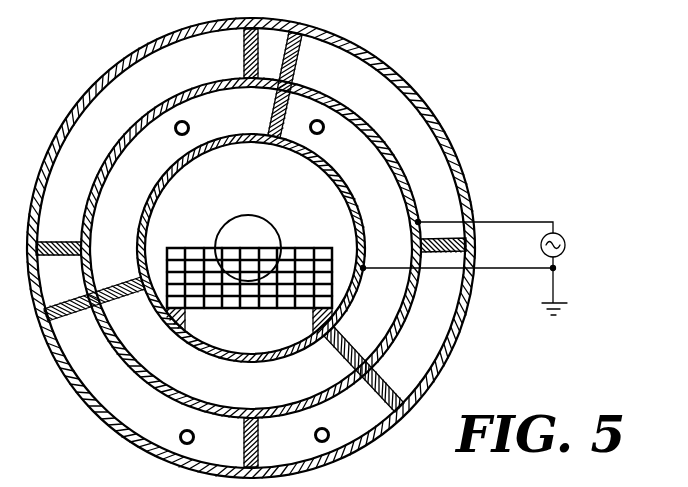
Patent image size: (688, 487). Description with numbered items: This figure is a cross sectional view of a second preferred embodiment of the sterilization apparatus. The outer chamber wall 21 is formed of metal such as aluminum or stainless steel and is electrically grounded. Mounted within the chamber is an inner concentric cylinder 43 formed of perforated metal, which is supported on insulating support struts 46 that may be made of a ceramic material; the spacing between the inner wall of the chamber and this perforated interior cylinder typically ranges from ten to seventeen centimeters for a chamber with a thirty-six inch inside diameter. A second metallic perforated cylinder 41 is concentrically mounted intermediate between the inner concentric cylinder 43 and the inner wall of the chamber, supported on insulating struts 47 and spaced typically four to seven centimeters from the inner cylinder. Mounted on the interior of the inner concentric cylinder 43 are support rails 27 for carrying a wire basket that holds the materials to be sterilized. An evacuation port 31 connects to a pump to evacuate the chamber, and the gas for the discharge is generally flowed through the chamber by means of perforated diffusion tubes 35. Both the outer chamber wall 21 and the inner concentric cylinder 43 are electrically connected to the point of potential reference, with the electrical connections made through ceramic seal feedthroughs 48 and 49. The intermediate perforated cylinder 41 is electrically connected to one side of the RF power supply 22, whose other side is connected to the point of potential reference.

The outer chamber wall 21 is at (127, 56).
The second metallic perforated cylinder 41 is at (383, 148).
The inner concentric cylinder 43 is at (317, 159).
The insulating struts 47 is at (241, 50).
The insulating support struts 46 is at (62, 318).
The perforated diffusion tubes 35 is at (181, 429).
The support rails 27 is at (187, 318).
The evacuation port 31 is at (250, 243).
The ceramic seal feedthrough 49 is at (474, 222).
The ceramic seal feedthrough 48 is at (418, 272).
The RF power supply 22 is at (566, 240).